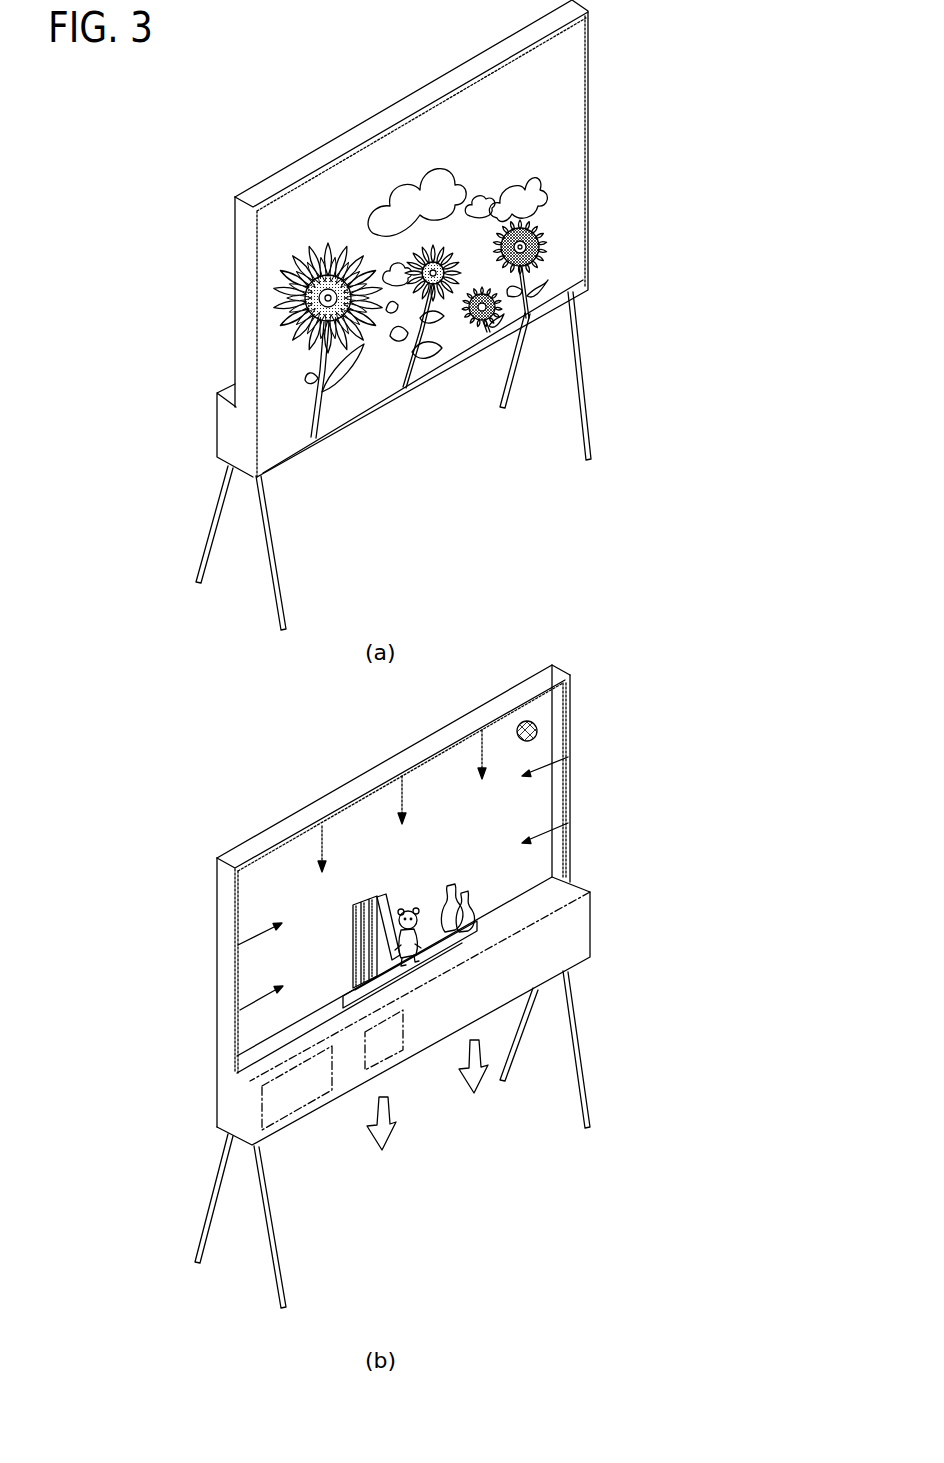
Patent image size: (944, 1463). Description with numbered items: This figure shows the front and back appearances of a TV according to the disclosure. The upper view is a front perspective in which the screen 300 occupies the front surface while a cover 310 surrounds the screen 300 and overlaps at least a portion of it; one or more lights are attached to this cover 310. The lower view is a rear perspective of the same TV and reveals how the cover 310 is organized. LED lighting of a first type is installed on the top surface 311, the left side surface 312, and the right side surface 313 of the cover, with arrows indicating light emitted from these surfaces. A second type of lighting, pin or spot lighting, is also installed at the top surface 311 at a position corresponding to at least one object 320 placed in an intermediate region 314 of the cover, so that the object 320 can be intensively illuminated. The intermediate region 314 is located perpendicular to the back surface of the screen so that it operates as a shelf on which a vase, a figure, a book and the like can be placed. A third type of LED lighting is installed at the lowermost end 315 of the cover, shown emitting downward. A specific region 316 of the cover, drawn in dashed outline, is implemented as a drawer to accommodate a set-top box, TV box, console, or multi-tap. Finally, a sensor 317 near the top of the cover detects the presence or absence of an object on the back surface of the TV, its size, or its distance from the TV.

The screen 300 is at (563, 172).
The cover 310 is at (236, 312).
The top surface 311 is at (420, 764).
The left side surface 312 is at (236, 985).
The right side surface 313 is at (571, 781).
The intermediate region 314 is at (549, 911).
The lowermost end (bottom) 315 is at (353, 1092).
The specific region 316 is at (278, 1104).
The sensor 317 is at (538, 724).
The object 320 is at (456, 946).